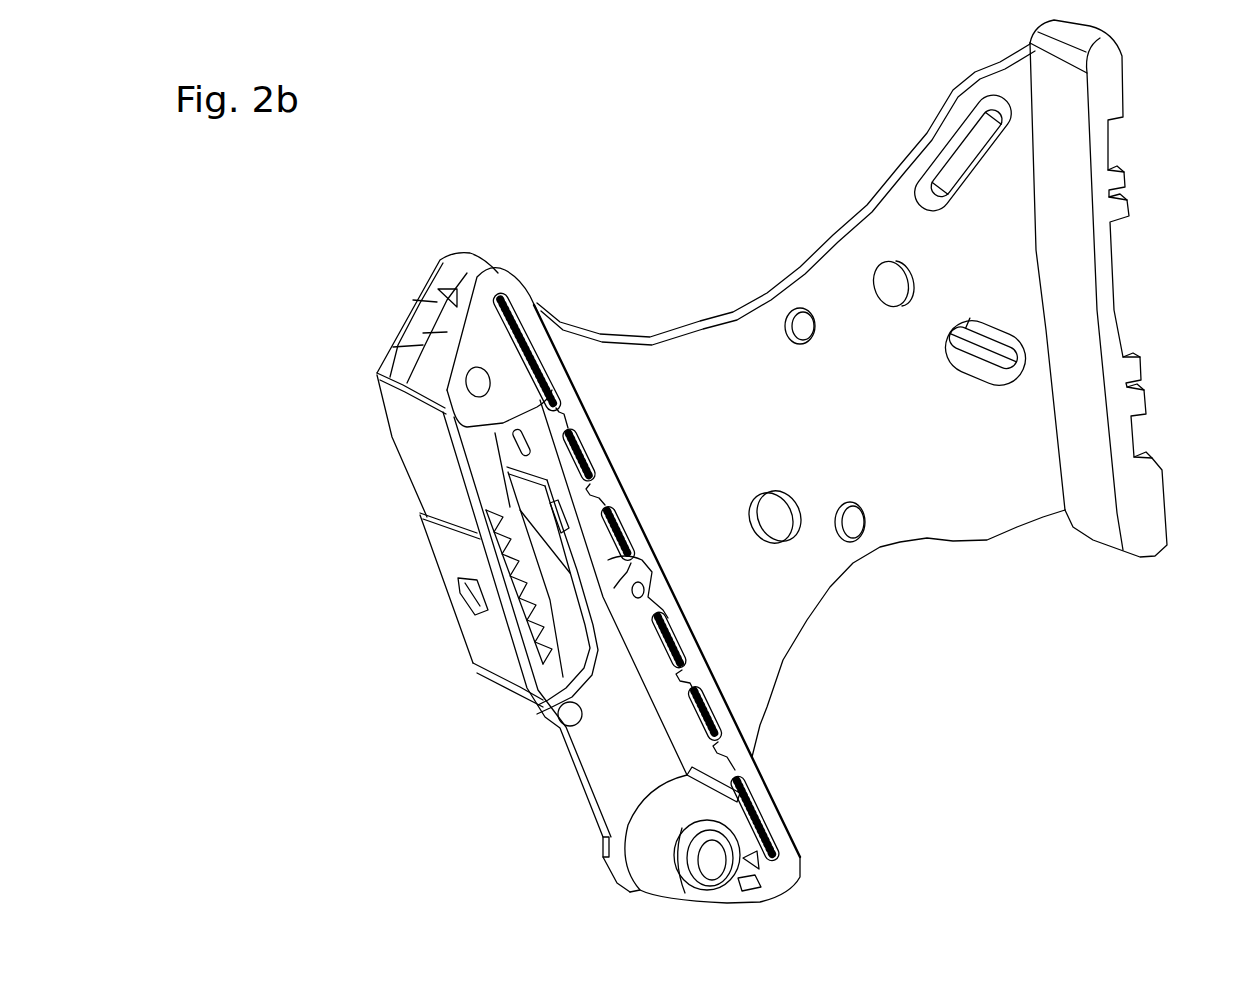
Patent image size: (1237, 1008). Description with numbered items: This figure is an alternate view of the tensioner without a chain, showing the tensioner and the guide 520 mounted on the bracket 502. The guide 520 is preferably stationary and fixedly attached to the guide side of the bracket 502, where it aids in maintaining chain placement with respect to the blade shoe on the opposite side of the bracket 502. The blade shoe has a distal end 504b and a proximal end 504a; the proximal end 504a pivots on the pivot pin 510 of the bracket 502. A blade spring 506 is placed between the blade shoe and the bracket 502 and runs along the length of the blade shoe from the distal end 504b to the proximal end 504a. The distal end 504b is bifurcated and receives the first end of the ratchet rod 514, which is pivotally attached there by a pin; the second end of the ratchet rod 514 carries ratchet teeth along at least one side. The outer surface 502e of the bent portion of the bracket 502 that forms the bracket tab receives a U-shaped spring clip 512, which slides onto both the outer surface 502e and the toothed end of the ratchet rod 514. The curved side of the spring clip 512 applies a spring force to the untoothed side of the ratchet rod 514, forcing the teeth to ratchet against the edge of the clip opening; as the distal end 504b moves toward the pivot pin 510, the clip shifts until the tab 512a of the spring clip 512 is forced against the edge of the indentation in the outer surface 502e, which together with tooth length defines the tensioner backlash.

The bracket 502 is at (733, 343).
The outer surface of the bent portion of the bracket 502e is at (416, 440).
The proximal end of the blade shoe 504a is at (793, 851).
The distal end of the blade shoe 504b is at (483, 345).
The blade spring 506 is at (519, 340).
The pivot pin 510 is at (710, 862).
The spring clip 512 is at (488, 650).
The tab of the spring clip 512a is at (470, 602).
The ratchet rod 514 is at (560, 716).
The guide 520 is at (1110, 510).